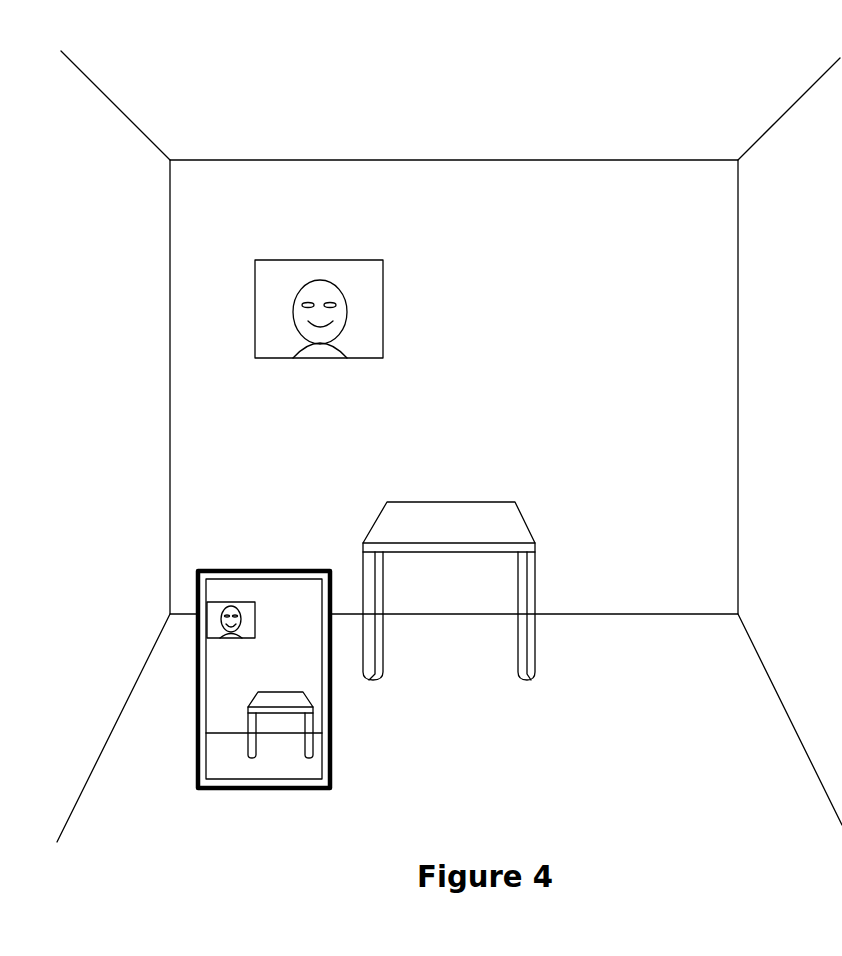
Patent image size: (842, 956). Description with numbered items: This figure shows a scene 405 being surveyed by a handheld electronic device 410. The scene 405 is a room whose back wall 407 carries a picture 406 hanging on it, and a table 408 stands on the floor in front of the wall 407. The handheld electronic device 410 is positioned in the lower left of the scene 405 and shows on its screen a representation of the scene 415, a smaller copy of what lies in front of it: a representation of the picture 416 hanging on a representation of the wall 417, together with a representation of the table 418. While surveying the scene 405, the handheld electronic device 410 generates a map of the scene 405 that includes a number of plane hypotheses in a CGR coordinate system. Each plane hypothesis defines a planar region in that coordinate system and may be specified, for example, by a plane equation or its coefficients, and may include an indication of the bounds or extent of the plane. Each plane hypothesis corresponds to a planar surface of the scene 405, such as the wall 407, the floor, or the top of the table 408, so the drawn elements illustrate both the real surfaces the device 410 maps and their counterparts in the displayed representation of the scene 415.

The scene 405 is at (722, 143).
The picture 406 is at (357, 260).
The wall 407 is at (530, 348).
The table 408 is at (465, 502).
The handheld electronic device 410 is at (262, 571).
The representation of the scene 415 is at (307, 667).
The representation of the picture 416 is at (248, 602).
The representation of the wall 417 is at (305, 641).
The representation of the table 418 is at (251, 692).